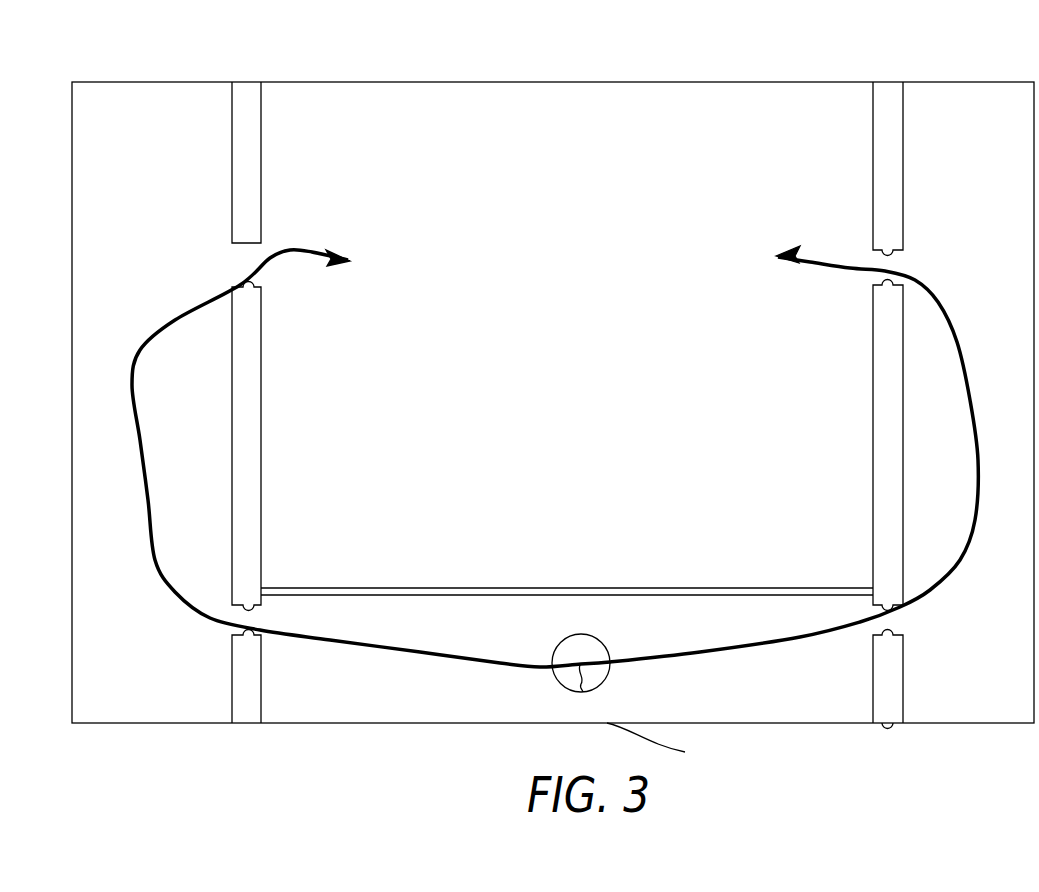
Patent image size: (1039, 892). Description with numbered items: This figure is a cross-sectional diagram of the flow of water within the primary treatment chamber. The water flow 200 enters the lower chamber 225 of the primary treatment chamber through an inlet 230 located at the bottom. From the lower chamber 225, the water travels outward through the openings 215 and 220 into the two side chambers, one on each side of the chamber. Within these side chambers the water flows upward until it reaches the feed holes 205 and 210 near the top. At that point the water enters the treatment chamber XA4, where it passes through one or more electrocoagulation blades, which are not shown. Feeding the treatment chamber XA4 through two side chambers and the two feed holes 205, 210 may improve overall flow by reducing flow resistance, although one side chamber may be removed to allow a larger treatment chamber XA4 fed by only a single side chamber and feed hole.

The water flow 200 is at (470, 660).
The feed hole 205 is at (903, 262).
The feed hole 210 is at (222, 255).
The opening 215 is at (912, 625).
The opening 220 is at (212, 628).
The lower chamber 225 is at (755, 693).
The inlet 230 is at (605, 643).
The treatment chamber XA4 is at (572, 155).